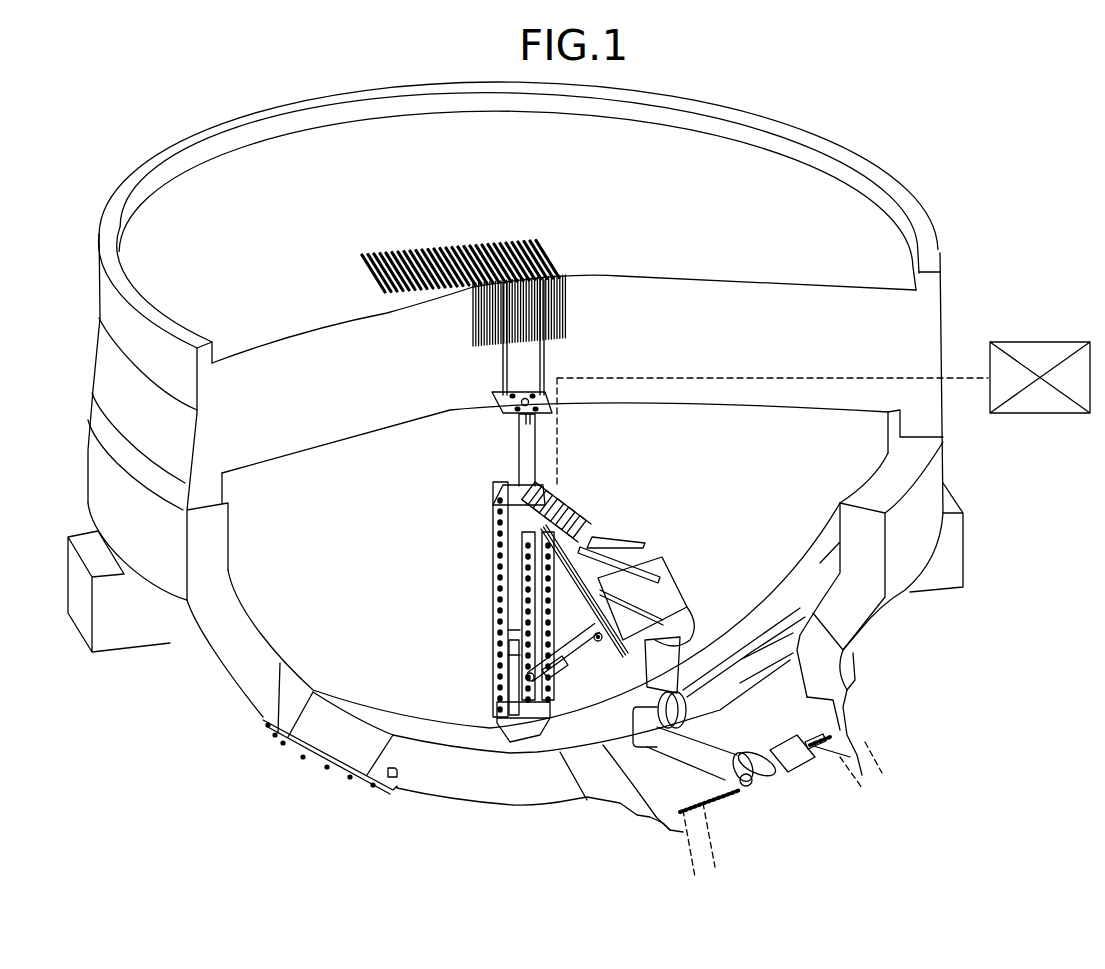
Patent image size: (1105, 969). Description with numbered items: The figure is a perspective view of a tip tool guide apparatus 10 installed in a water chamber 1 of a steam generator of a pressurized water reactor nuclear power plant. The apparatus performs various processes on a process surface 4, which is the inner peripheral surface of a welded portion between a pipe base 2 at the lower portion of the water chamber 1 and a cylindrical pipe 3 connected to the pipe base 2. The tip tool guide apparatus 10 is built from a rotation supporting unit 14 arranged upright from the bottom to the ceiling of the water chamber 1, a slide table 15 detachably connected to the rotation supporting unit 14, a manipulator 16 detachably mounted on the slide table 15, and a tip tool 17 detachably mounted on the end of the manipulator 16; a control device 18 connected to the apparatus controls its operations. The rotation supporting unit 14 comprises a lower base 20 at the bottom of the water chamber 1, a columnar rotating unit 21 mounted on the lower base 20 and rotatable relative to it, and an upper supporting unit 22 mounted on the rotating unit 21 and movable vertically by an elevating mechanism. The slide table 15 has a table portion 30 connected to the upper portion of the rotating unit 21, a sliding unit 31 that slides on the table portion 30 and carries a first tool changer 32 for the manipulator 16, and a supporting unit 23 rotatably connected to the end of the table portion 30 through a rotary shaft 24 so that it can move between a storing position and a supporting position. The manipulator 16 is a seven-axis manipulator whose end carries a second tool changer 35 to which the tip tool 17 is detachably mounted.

The water chamber 1 is at (263, 600).
The pipe base 2 is at (840, 692).
The cylindrical pipe 3 is at (850, 760).
The process surface 4 is at (703, 813).
The tip tool guide apparatus 10 is at (609, 461).
The rotation supporting unit 14 is at (493, 514).
The slide table 15 is at (586, 527).
The manipulator 16 is at (693, 629).
The tip tool 17 is at (817, 760).
The control device 18 is at (1050, 317).
The lower base 20 is at (537, 727).
The rotating unit 21 is at (555, 628).
The upper supporting unit 22 is at (523, 443).
The supporting unit 23 is at (568, 657).
The rotary shaft 24 is at (600, 640).
The table portion 30 is at (540, 578).
The sliding unit 31 is at (592, 552).
The first tool changer 32 is at (623, 555).
The second tool changer 35 is at (800, 780).